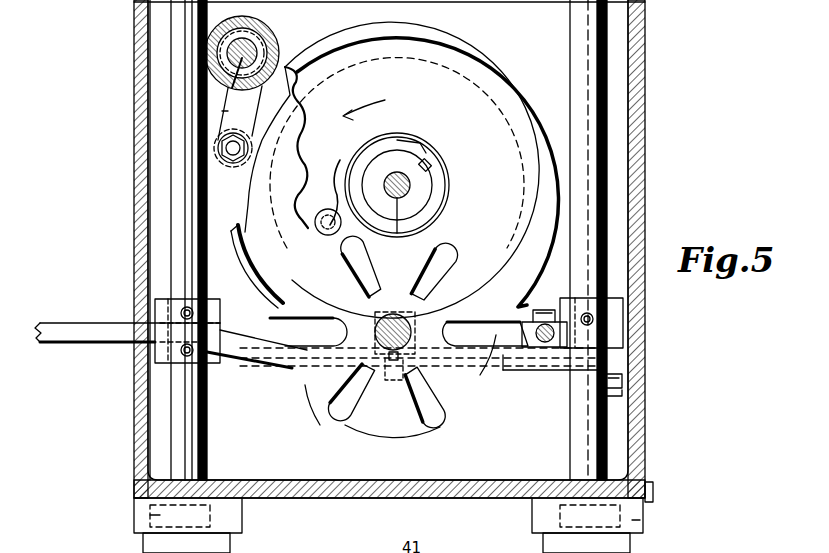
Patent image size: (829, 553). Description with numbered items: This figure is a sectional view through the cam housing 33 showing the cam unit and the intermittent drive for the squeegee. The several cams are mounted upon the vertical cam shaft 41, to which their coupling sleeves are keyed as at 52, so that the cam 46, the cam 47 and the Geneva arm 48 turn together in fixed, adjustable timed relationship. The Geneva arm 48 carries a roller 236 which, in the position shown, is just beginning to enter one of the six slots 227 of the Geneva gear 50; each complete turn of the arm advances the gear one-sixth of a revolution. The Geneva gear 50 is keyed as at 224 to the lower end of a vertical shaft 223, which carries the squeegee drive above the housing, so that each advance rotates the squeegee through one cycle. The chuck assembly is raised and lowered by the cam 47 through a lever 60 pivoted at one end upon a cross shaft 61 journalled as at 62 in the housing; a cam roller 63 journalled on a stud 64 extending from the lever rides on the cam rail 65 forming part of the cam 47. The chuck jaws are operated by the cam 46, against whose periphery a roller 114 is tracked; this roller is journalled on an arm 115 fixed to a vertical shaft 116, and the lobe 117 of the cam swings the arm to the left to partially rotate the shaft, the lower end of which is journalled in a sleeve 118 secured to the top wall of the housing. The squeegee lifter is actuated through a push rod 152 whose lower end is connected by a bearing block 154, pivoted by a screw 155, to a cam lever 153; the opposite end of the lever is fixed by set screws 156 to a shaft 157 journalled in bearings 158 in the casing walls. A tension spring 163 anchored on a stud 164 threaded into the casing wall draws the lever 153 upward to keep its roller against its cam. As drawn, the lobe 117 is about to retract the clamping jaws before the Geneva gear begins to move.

The cam housing 33 is at (132, 403).
The cam shaft 41 is at (397, 185).
The cam 46 is at (268, 210).
The cam 47 is at (414, 170).
The Geneva arm 48 is at (334, 185).
The Geneva gear 50 is at (384, 333).
The key 52 is at (388, 188).
The lever 60 is at (72, 334).
The cross shaft 61 is at (598, 148).
The journal 62 is at (640, 520).
The cam roller 63 is at (470, 320).
The stud 64 is at (398, 382).
The cam rail 65 is at (492, 65).
The roller 114 is at (231, 159).
The arm 115 is at (222, 111).
The vertical shaft 116 is at (240, 99).
The lobe 117 is at (275, 126).
The sleeve 118 is at (262, 37).
The push rod 152 is at (545, 343).
The cam lever 153 is at (247, 372).
The bearing block 154 is at (525, 333).
The screw 155 is at (543, 308).
The set screws 156 is at (197, 358).
The shaft 157 is at (172, 250).
The bearings 158 is at (160, 515).
The tension spring 163 is at (610, 393).
The stud 164 is at (625, 377).
The vertical shaft 223 is at (393, 316).
The key 224 is at (385, 355).
The slots 227 is at (460, 232).
The roller 236 is at (322, 212).